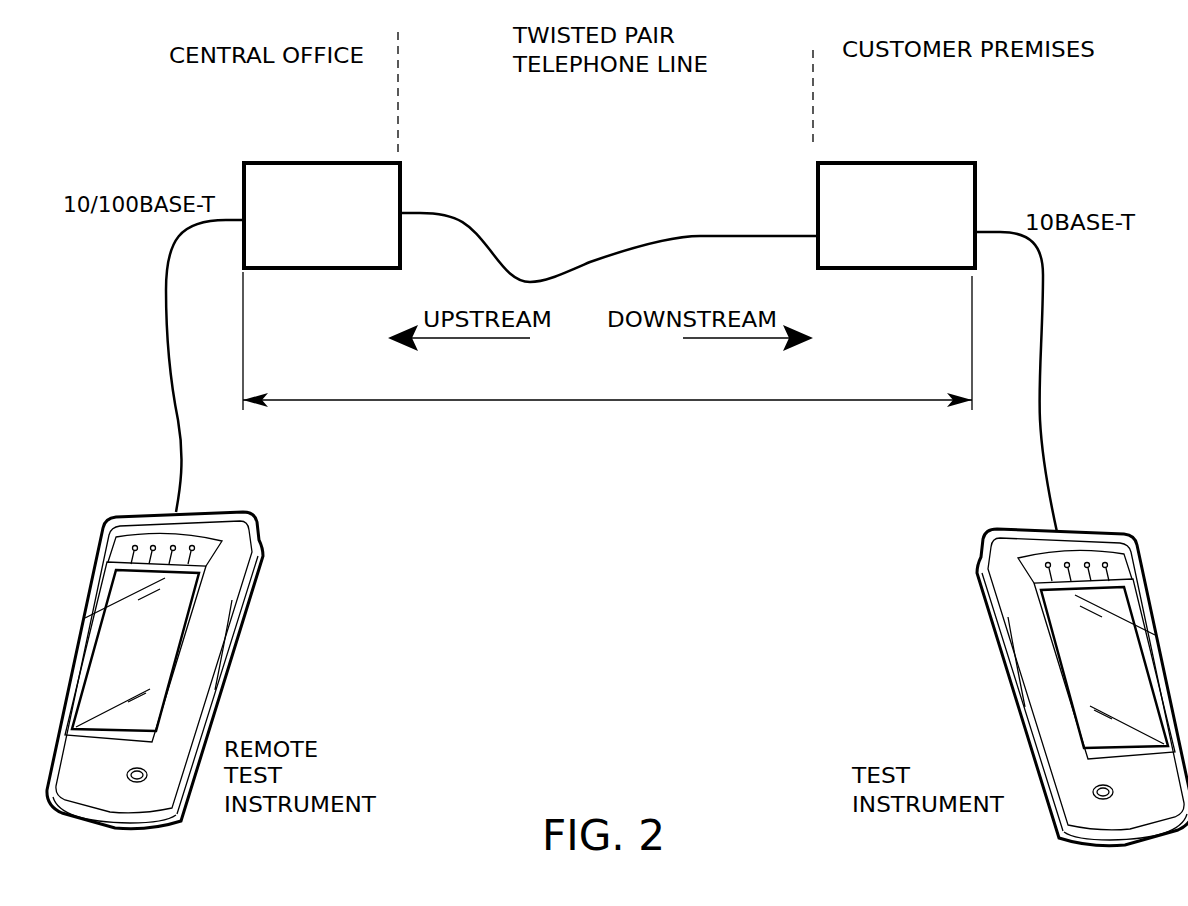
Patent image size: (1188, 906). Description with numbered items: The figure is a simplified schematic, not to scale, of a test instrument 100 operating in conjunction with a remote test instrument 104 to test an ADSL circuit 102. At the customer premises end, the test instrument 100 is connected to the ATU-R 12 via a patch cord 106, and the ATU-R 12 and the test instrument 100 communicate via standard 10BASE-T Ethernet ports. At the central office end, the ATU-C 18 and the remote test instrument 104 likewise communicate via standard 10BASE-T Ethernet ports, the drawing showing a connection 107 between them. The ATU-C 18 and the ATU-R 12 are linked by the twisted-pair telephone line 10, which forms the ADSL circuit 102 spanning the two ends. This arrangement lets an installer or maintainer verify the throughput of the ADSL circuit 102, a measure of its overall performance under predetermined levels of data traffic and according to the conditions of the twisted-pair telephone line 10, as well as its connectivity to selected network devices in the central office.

The twisted-pair telephone line 10 is at (587, 262).
The ATU-R 12 is at (890, 162).
The ATU-C 18 is at (325, 162).
The test instrument 100 is at (1012, 532).
The ADSL circuit 102 is at (778, 392).
The remote test instrument 104 is at (213, 512).
The patch cord 106 is at (1040, 418).
The 10/100BASE-T connection cable 107 is at (182, 430).